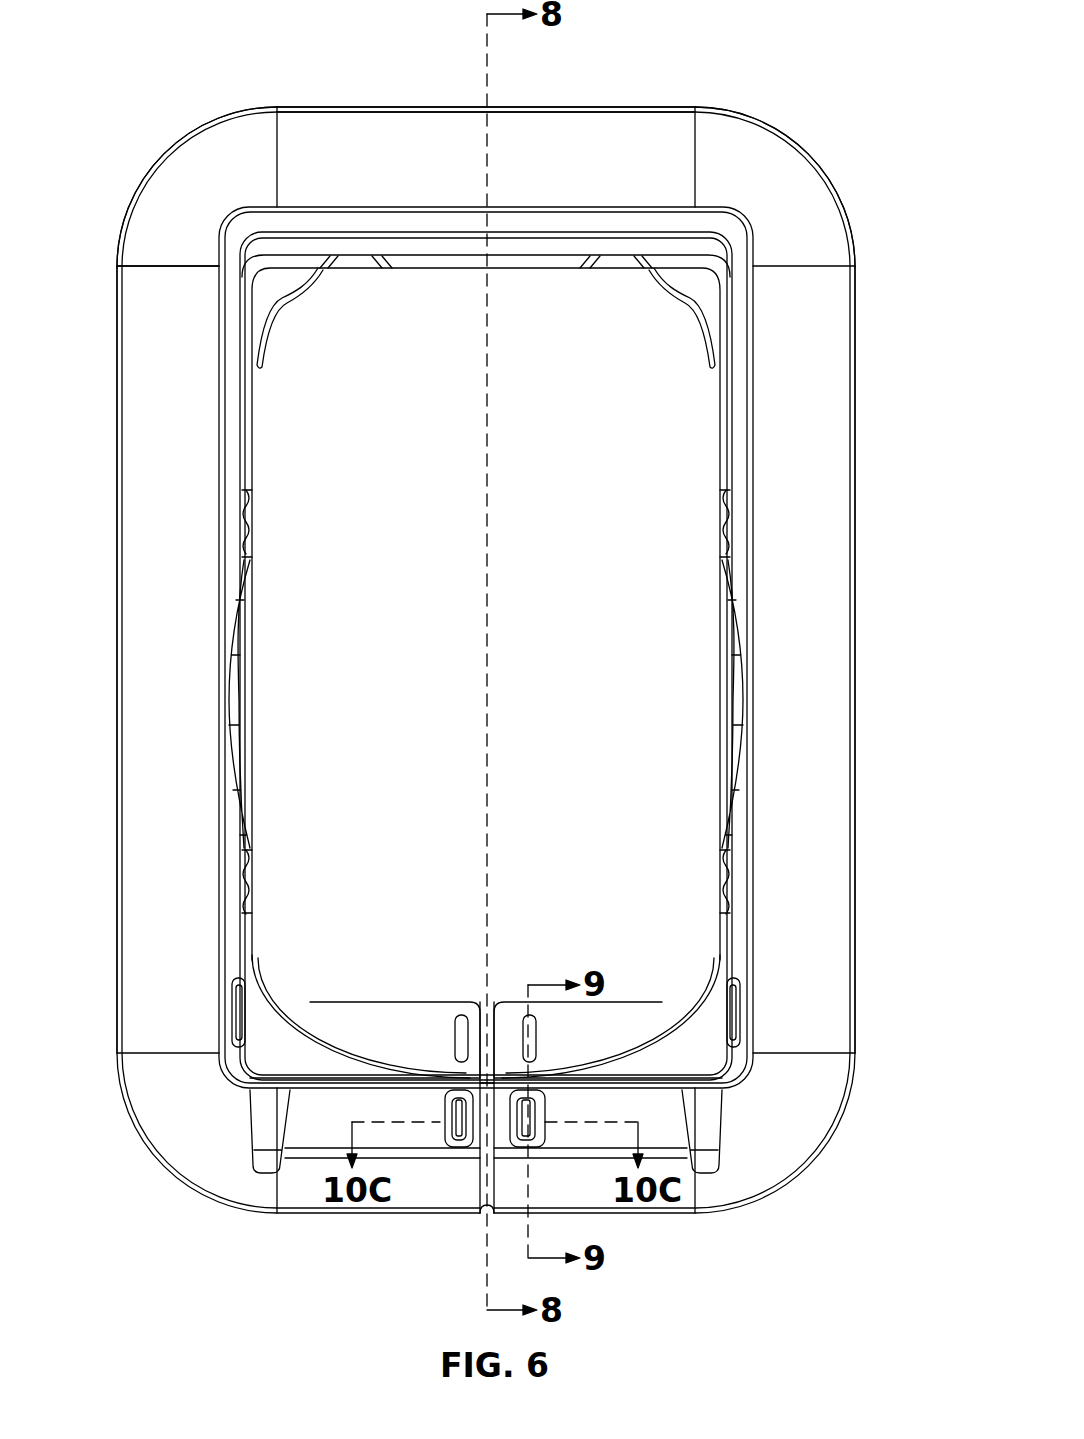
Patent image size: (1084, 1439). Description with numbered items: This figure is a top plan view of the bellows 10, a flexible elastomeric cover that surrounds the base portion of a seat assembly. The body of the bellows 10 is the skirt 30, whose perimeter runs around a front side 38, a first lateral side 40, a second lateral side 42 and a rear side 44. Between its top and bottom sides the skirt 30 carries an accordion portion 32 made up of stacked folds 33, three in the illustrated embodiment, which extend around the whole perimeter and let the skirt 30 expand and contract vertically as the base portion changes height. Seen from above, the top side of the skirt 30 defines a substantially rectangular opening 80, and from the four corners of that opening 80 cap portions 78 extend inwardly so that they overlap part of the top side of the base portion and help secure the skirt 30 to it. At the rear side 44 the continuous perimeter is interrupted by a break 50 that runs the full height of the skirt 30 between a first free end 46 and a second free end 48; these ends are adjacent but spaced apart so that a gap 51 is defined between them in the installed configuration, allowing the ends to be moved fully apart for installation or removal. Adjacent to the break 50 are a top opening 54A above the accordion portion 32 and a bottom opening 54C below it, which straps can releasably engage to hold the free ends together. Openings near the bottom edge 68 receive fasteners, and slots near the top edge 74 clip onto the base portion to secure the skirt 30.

The bellows 10 is at (203, 83).
The skirt 30 is at (285, 107).
The accordion portion 32 is at (110, 265).
The folds 33 is at (145, 325).
The front side 38 is at (715, 55).
The first lateral side 40 is at (113, 713).
The second lateral side 42 is at (875, 612).
The rear side 44 is at (270, 1289).
The first free end 46 is at (480, 1200).
The second free end 48 is at (494, 1200).
The break 50 is at (500, 1080).
The gap 51 is at (487, 1236).
The top opening 54A is at (520, 1147).
The bottom opening 54C is at (528, 1020).
The bottom edge 68 is at (355, 1002).
The top edge 74 is at (730, 440).
The cap portions 78 is at (285, 281).
The opening 80 is at (700, 620).